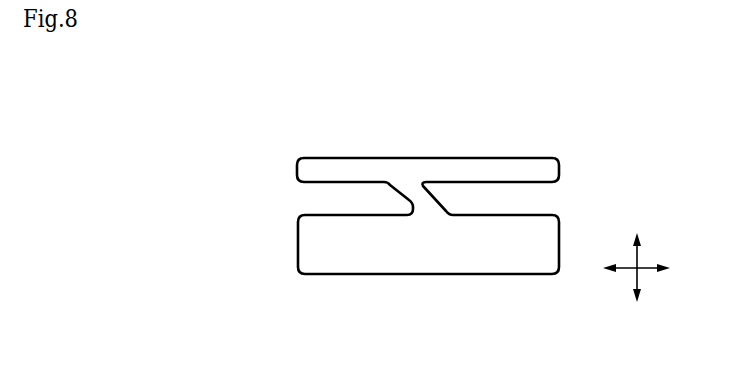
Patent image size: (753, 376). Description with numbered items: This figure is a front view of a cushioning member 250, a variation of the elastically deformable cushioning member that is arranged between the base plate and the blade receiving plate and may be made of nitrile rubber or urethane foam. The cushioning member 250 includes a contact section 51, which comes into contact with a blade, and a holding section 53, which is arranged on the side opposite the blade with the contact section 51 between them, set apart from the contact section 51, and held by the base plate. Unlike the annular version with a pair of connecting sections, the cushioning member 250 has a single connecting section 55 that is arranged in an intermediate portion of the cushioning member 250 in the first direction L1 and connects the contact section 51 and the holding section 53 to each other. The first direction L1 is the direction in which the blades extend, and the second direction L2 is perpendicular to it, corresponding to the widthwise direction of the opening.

The cushioning member 250 is at (247, 122).
The contact section 51 is at (459, 170).
The holding section 53 is at (427, 254).
The connecting section 55 is at (414, 194).
The first direction L1 is at (642, 270).
The second direction L2 is at (638, 257).